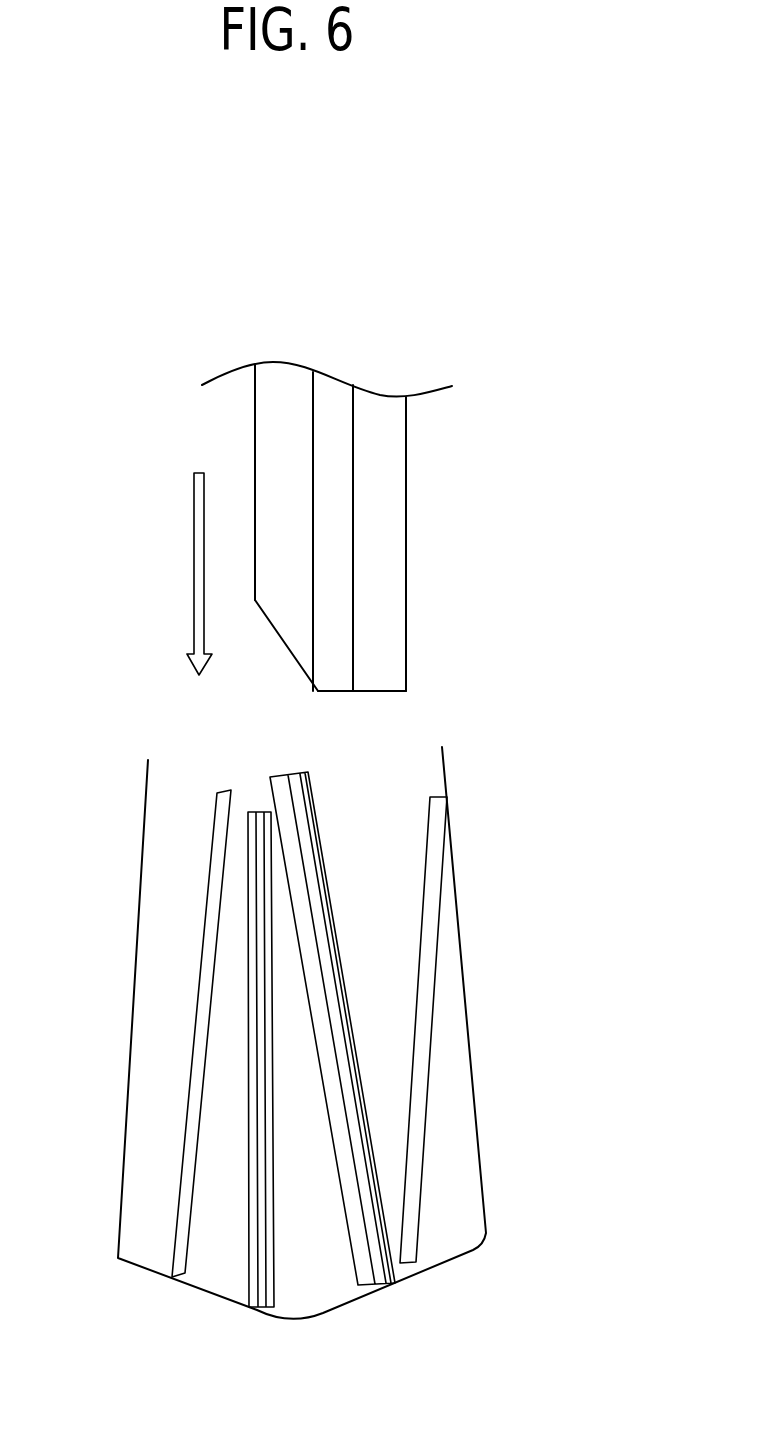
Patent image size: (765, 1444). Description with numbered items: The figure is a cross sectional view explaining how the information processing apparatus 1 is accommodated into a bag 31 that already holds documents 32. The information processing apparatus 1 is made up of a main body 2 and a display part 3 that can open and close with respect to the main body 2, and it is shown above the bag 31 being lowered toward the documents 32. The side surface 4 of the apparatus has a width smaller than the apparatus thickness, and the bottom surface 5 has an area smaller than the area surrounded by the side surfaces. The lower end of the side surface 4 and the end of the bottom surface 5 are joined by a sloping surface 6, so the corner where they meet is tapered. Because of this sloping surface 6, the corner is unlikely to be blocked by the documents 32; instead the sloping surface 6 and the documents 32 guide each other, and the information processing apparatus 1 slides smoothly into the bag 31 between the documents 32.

The information processing apparatus 1 is at (408, 470).
The main body 2 is at (333, 392).
The display part 3 is at (395, 568).
The side surface 4 is at (392, 693).
The bottom surface 5 is at (253, 410).
The sloping surface 6 is at (294, 658).
The bag 31 is at (460, 928).
The documents 32 is at (363, 1102).